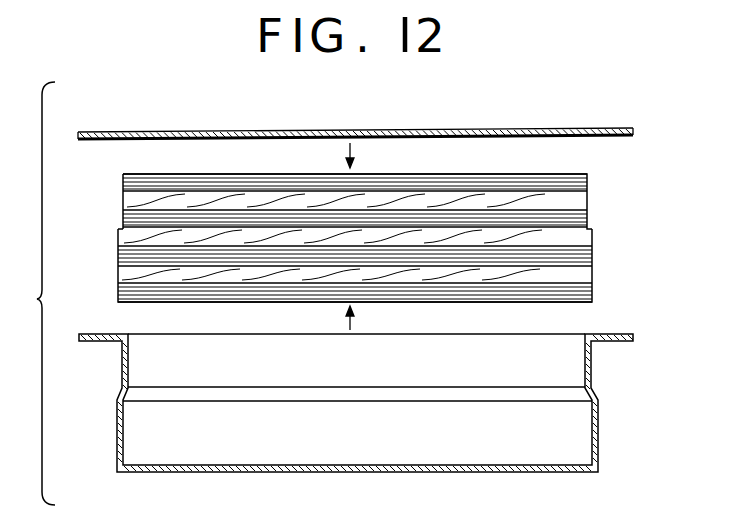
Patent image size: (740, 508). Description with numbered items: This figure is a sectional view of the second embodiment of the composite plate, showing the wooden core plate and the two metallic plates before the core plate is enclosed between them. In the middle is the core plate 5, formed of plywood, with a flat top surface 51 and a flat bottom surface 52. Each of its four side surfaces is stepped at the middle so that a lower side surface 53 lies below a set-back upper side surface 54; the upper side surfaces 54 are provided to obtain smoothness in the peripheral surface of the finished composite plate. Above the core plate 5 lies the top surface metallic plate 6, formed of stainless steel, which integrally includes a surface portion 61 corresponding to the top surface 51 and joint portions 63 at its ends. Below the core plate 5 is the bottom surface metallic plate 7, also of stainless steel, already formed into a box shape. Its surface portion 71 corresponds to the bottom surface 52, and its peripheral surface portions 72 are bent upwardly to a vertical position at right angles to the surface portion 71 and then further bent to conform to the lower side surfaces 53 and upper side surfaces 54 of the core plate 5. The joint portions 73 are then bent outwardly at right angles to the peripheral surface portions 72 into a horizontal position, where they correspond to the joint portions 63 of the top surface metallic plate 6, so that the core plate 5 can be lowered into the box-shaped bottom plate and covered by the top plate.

The core plate 5 is at (355, 234).
The top surface 51 is at (437, 174).
The bottom surface 52 is at (392, 303).
The lower side surface 53 is at (118, 270).
The upper side surface 54 is at (122, 202).
The top surface metallic plate 6 is at (358, 110).
The surface portion 61 is at (276, 130).
The joint portions 63 is at (87, 132).
The bottom surface metallic plate 7 is at (359, 421).
The surface portion 71 is at (401, 474).
The peripheral surface portions 72 is at (117, 425).
The joint portions 73 is at (79, 340).